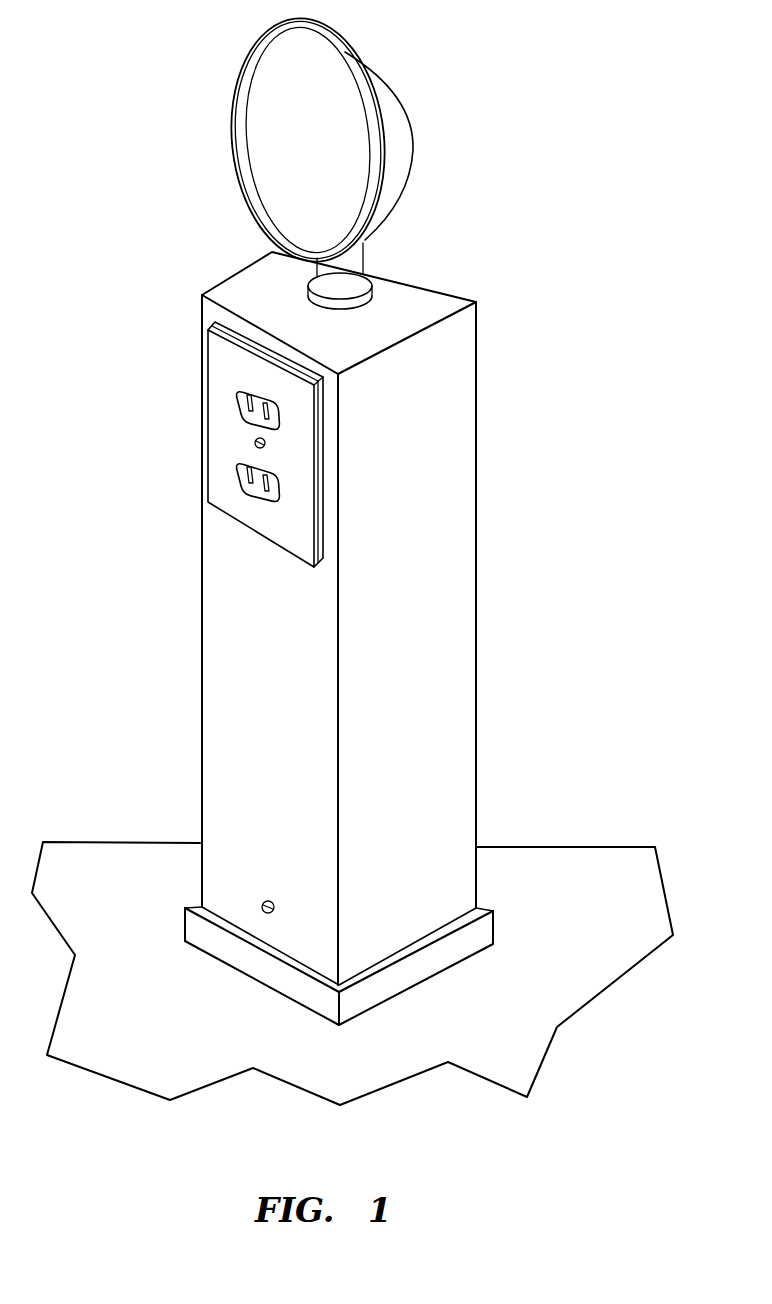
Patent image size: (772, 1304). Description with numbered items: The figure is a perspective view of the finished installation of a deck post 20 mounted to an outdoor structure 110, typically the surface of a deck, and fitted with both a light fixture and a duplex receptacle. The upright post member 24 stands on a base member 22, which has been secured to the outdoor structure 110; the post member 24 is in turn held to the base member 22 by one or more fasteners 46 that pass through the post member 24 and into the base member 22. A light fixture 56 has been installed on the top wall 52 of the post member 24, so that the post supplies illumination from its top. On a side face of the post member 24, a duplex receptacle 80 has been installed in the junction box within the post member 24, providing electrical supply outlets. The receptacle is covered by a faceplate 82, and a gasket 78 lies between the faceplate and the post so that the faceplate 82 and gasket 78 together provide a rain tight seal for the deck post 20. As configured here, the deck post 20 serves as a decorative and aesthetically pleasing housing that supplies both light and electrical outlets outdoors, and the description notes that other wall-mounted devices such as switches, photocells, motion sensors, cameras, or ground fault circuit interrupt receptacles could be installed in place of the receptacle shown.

The deck post 20 is at (416, 518).
The base member 22 is at (482, 932).
The post member 24 is at (370, 616).
The fasteners 46 is at (262, 903).
The top wall 52 is at (437, 297).
The light fixture 56 is at (404, 126).
The gasket 78 is at (325, 477).
The duplex receptacle 80 is at (242, 383).
The faceplate 82 is at (218, 448).
The outdoor structure 110 is at (578, 860).